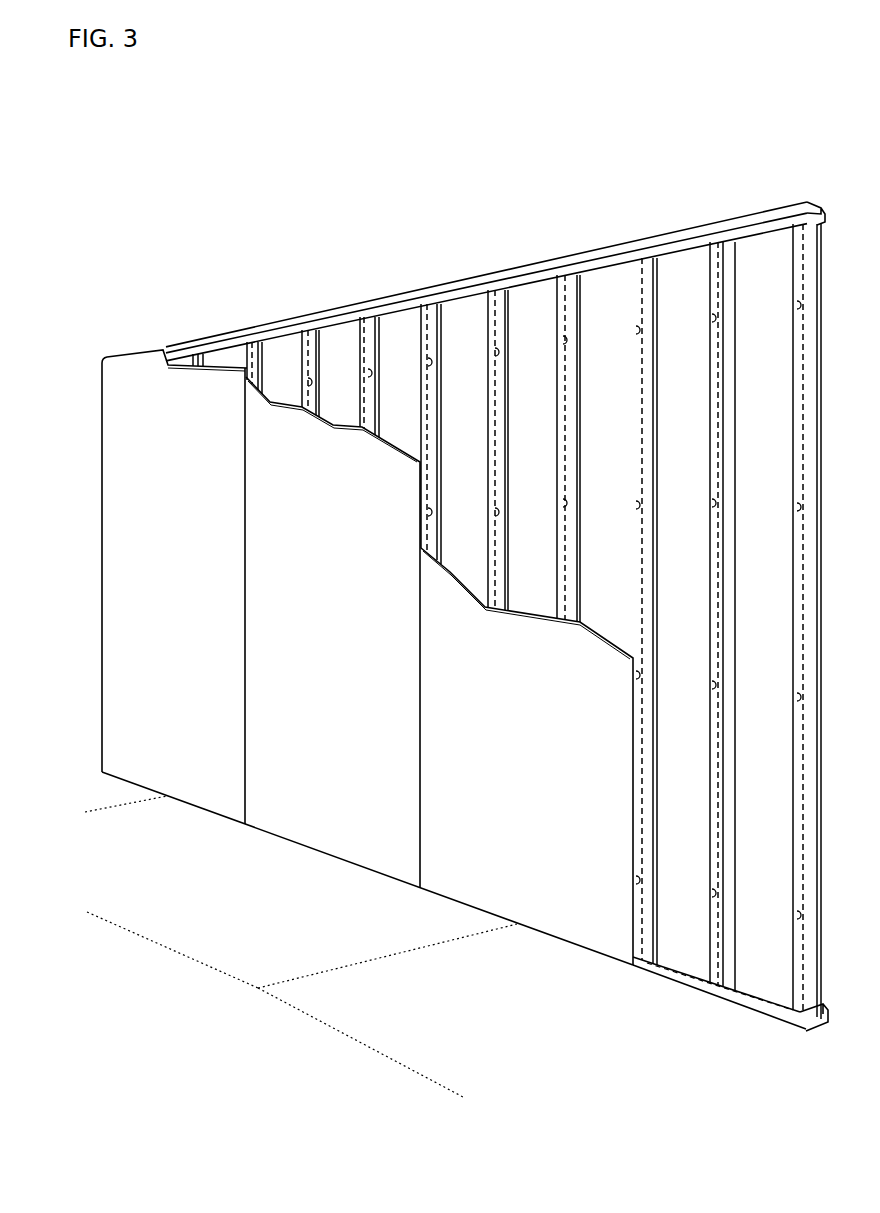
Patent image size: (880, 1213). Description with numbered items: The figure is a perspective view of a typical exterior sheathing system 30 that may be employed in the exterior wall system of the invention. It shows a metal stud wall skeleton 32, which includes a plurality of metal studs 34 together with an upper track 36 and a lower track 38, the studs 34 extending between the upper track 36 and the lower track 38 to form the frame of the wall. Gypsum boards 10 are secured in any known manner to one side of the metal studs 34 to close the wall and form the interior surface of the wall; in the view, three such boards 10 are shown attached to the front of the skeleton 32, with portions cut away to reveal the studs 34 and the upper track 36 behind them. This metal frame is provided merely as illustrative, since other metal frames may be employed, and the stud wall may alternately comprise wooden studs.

The gypsum board 10 is at (152, 390).
The exterior sheathing system 30 is at (221, 286).
The metal stud wall skeleton 32 is at (316, 296).
The metal stud 34 is at (430, 337).
The upper track 36 is at (532, 263).
The lower track 38 is at (692, 982).